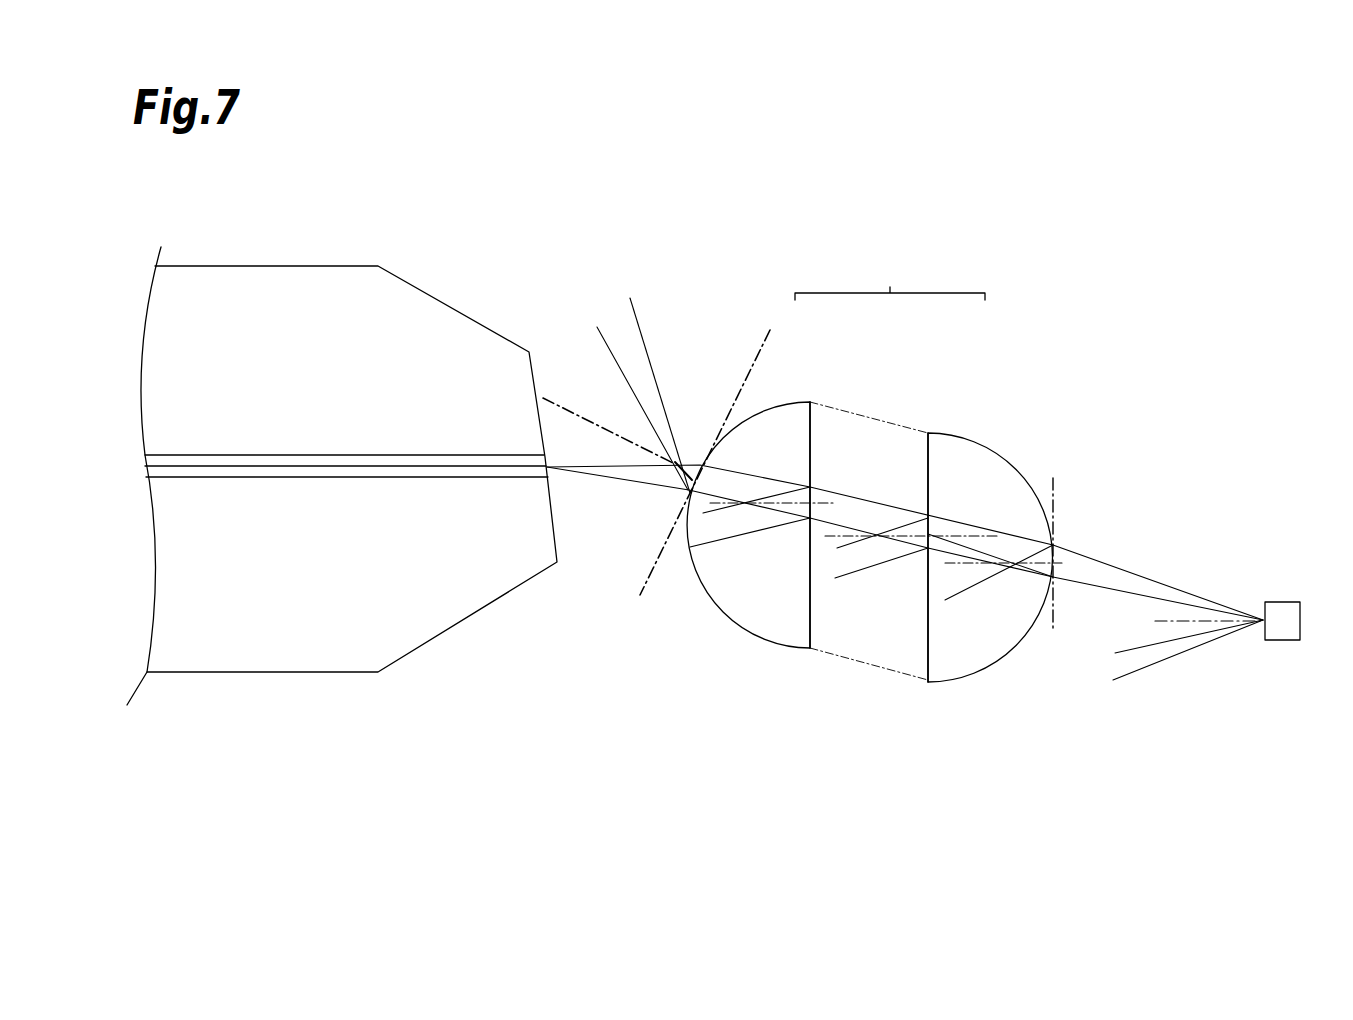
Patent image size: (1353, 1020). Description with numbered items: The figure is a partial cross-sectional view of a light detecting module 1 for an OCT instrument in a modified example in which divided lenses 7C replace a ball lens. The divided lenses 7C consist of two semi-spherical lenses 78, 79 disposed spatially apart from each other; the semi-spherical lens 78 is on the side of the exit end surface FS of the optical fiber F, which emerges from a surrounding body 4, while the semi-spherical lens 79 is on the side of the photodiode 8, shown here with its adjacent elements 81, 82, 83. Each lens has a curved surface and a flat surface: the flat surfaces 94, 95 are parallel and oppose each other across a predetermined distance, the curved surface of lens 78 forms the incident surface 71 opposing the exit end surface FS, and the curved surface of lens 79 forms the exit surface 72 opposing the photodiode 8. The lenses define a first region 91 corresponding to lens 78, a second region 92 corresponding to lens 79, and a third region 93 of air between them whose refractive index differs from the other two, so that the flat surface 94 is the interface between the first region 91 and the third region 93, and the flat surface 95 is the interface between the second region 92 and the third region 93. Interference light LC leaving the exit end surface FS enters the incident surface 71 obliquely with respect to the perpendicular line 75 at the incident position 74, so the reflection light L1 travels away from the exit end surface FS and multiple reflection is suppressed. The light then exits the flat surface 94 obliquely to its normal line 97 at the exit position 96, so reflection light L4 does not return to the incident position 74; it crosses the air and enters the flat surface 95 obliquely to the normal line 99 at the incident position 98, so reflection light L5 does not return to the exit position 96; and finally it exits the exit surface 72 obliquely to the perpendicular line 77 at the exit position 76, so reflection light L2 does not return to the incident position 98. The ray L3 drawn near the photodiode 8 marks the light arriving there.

The light detecting module 1 is at (1098, 275).
The light guide plate 4 is at (342, 449).
The optical fiber F is at (292, 472).
The exit end surface FS is at (562, 470).
The interference light LC is at (623, 483).
The perpendicular line 75 is at (570, 392).
The reflection light L1 is at (643, 332).
The incident position 74 is at (689, 465).
The divided lenses 7C is at (886, 515).
The semi-spherical lens 78 is at (731, 511).
The semi-spherical lens 79 is at (1038, 537).
The incident surface 71 is at (731, 545).
The exit surface 72 is at (1038, 599).
The first region 91 is at (737, 608).
The flat surface 94 is at (815, 422).
The perpendicular line 97 is at (690, 557).
The third region 93 is at (853, 647).
The flat surface 95 is at (927, 650).
The second region 92 is at (948, 665).
The reflection light L4 is at (757, 508).
The exit position 96 is at (813, 494).
The reflection light L5 is at (878, 565).
The perpendicular line 99 is at (840, 540).
The incident position 98 is at (942, 532).
The reflection light L2 is at (968, 585).
The perpendicular line 77 is at (1015, 575).
The exit position 76 is at (1060, 553).
The photodiode 8 is at (1248, 611).
The light receiving element 81 is at (1258, 600).
The light receiving surface 82 is at (1260, 637).
The incident light 83 is at (1203, 627).
The light ray L3 is at (1150, 667).